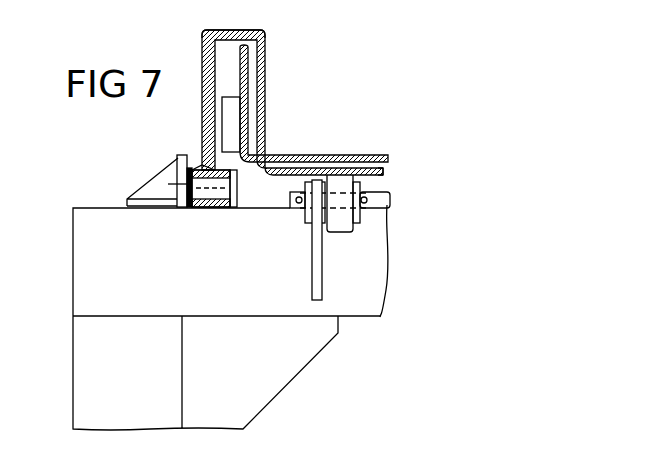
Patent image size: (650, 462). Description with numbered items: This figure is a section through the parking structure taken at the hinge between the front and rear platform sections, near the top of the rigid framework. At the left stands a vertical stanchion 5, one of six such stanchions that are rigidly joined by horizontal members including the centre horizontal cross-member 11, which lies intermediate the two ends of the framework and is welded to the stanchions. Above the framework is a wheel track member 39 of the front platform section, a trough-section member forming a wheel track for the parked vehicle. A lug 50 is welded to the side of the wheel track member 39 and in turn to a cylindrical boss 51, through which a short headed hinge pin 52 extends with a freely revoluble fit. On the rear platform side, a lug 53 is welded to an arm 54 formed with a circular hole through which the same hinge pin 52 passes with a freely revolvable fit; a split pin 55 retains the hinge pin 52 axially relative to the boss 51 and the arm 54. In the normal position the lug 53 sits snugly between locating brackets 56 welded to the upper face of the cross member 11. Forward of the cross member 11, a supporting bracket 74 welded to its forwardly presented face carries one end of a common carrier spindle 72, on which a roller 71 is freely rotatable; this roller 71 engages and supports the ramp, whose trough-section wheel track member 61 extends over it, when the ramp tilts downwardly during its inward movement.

The vertical stanchion 5 is at (83, 336).
The centre horizontal cross-member 11 is at (352, 305).
The wheel track member 39 is at (371, 153).
The lug 50 is at (210, 92).
The cylindrical boss 51 is at (230, 205).
The hinge pin 52 is at (198, 203).
The lug 53 is at (202, 88).
The arm 54 is at (200, 168).
The split pin 55 is at (180, 193).
The locating bracket 56 is at (160, 177).
The wheel track member 61 is at (384, 171).
The roller 71 is at (335, 221).
The carrier spindle 72 is at (378, 194).
The supporting bracket 74 is at (313, 277).